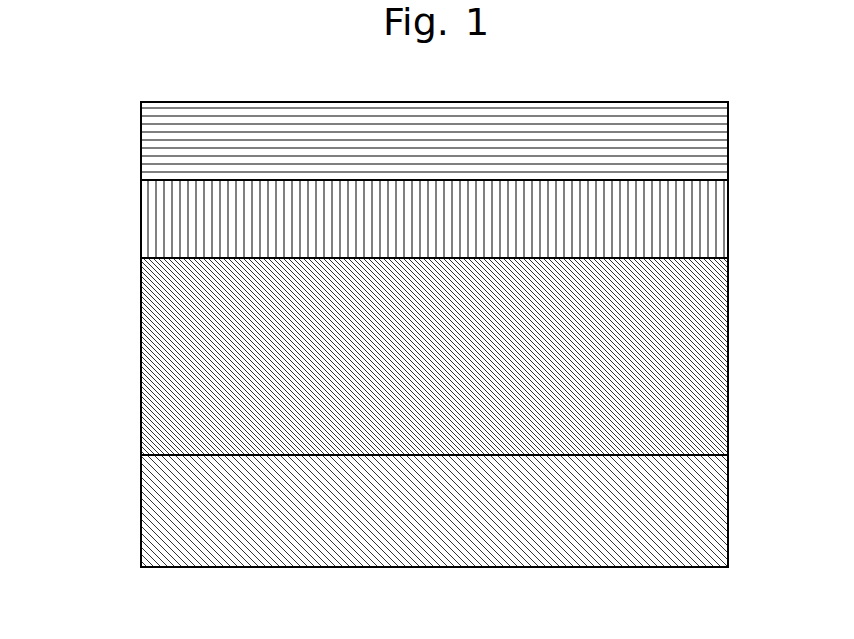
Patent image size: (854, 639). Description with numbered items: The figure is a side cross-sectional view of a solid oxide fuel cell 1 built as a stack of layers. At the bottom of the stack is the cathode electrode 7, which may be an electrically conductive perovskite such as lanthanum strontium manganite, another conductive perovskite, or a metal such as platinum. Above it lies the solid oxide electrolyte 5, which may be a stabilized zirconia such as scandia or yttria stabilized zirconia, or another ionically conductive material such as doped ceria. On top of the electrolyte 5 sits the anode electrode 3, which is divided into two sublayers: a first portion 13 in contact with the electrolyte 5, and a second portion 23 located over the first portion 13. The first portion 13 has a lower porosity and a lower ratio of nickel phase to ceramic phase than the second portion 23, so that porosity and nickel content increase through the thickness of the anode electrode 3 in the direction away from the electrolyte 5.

The solid oxide fuel cell 1 is at (591, 78).
The anode electrode 3 is at (738, 101).
The second portion of the anode electrode 23 is at (148, 141).
The first portion of the anode electrode 13 is at (148, 224).
The solid oxide electrolyte 5 is at (148, 360).
The cathode electrode 7 is at (148, 513).